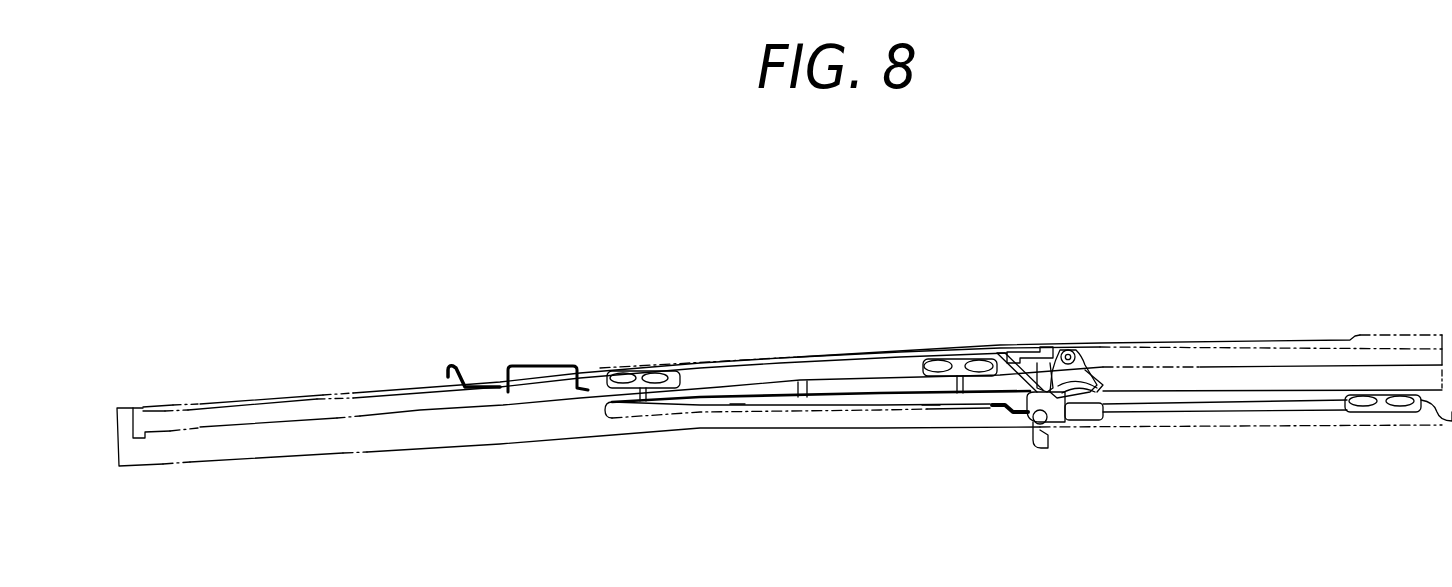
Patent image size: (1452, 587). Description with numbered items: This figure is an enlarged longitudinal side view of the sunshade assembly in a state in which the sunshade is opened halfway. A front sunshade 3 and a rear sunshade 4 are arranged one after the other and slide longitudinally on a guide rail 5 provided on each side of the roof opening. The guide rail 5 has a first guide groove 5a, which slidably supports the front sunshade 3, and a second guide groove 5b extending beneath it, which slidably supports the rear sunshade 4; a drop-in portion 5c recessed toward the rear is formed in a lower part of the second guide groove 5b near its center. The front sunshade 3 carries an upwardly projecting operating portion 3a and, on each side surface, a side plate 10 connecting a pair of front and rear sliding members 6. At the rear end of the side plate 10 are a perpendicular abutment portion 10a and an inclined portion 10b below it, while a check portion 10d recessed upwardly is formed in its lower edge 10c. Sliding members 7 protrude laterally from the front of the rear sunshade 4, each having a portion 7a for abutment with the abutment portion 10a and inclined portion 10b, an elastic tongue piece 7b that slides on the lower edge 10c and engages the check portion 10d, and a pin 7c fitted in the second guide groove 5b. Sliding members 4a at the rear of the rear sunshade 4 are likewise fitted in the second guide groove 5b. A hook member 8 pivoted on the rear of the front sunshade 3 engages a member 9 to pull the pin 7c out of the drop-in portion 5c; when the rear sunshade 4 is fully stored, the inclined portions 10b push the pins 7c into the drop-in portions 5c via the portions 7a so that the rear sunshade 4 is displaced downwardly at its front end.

The front sunshade 3 is at (485, 380).
The operating portion 3a is at (560, 364).
The rear sunshade 4 is at (1177, 420).
The sliding members 4a is at (1363, 413).
The guide rail 5 is at (485, 430).
The first guide groove 5a is at (367, 400).
The second guide groove 5b is at (690, 410).
The drop-in portion 5c is at (1043, 440).
The sliding members 6 is at (660, 370).
The sliding members 7 is at (1090, 422).
The portion for abutment 7a is at (1003, 352).
The elastic tongue piece 7b is at (1103, 385).
The pin 7c is at (1028, 426).
The hook member 8 is at (1100, 355).
The member for engagement 9 is at (1062, 425).
The side plate 10 is at (883, 387).
The abutment portion 10a is at (1057, 343).
The inclined portion 10b is at (1047, 382).
The lower edge 10c is at (930, 405).
The check portion 10d is at (737, 403).